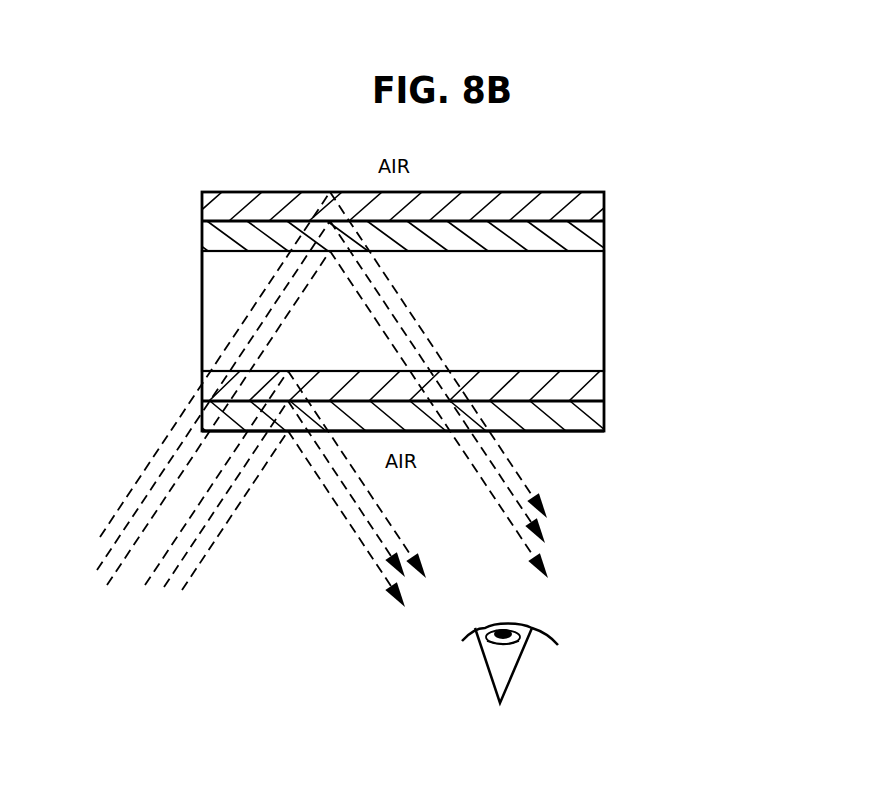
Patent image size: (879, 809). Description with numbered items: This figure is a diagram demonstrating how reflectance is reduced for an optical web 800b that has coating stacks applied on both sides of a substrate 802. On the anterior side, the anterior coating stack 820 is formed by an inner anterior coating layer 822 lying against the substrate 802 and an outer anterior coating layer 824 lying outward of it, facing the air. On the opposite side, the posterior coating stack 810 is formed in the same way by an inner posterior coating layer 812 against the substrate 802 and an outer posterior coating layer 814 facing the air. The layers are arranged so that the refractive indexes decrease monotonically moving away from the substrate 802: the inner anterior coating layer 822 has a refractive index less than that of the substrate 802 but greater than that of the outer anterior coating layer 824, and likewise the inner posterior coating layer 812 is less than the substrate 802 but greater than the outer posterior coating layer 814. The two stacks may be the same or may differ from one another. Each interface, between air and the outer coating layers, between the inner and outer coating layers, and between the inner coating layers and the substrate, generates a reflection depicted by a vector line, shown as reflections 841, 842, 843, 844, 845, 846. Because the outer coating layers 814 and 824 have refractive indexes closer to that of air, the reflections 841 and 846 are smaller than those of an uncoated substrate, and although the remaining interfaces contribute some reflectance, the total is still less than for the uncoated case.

The optical web 800b is at (626, 82).
The anterior coating stack 820 is at (532, 178).
The outer anterior coating layer 824 is at (604, 205).
The inner anterior coating layer 822 is at (604, 238).
The substrate 802 is at (593, 312).
The posterior coating stack 810 is at (628, 410).
The inner posterior coating layer 812 is at (604, 388).
The outer posterior coating layer 814 is at (585, 432).
The reflection 841 is at (196, 570).
The reflection 842 is at (168, 587).
The reflection 843 is at (148, 583).
The reflection 844 is at (112, 582).
The reflection 845 is at (105, 557).
The reflection 846 is at (192, 402).